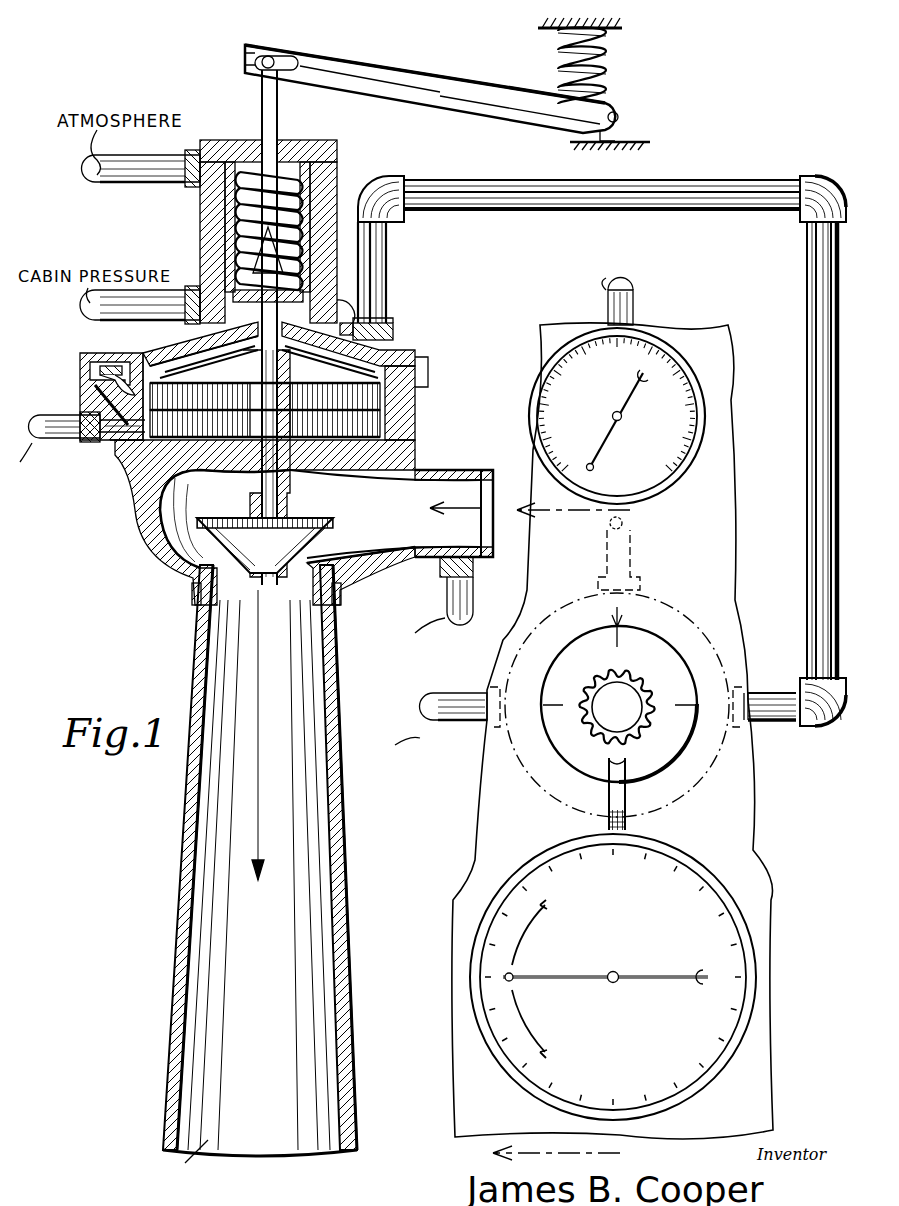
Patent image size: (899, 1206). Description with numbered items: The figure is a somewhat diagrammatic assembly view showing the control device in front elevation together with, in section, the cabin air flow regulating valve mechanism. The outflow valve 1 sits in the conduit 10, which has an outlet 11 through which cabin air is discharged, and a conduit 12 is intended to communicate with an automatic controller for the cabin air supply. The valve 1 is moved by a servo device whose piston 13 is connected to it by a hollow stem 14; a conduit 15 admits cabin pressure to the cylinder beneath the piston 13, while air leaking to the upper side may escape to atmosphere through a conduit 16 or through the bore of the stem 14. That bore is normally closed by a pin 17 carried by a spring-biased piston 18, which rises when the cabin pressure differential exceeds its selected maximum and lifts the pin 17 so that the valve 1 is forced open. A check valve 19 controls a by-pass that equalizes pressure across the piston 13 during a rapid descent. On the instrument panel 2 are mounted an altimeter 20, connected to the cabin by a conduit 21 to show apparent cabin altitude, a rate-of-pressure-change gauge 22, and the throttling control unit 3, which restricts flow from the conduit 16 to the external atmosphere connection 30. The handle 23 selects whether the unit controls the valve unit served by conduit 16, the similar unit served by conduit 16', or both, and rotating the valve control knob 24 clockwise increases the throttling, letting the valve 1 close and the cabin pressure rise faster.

The valve 1 is at (328, 542).
The instrument panel 2 is at (618, 502).
The control unit 3 is at (700, 628).
The conduit 10 is at (370, 550).
The outlet 11 is at (200, 660).
The conduit 12 is at (447, 607).
The piston 13 is at (160, 347).
The hollow stem 14 is at (253, 512).
The conduit 15 is at (62, 432).
The conduit 16 is at (601, 480).
The conduit 16' is at (416, 746).
The pin 17 is at (355, 312).
The piston 18 is at (200, 263).
The check valve 19 is at (90, 379).
The altimeter 20 is at (671, 487).
The conduit 21 is at (631, 287).
The rate-of-pressure-change gauge 22 is at (710, 1079).
The handle 23 is at (610, 792).
The valve control knob 24 is at (633, 737).
The external atmosphere connection 30 is at (633, 553).